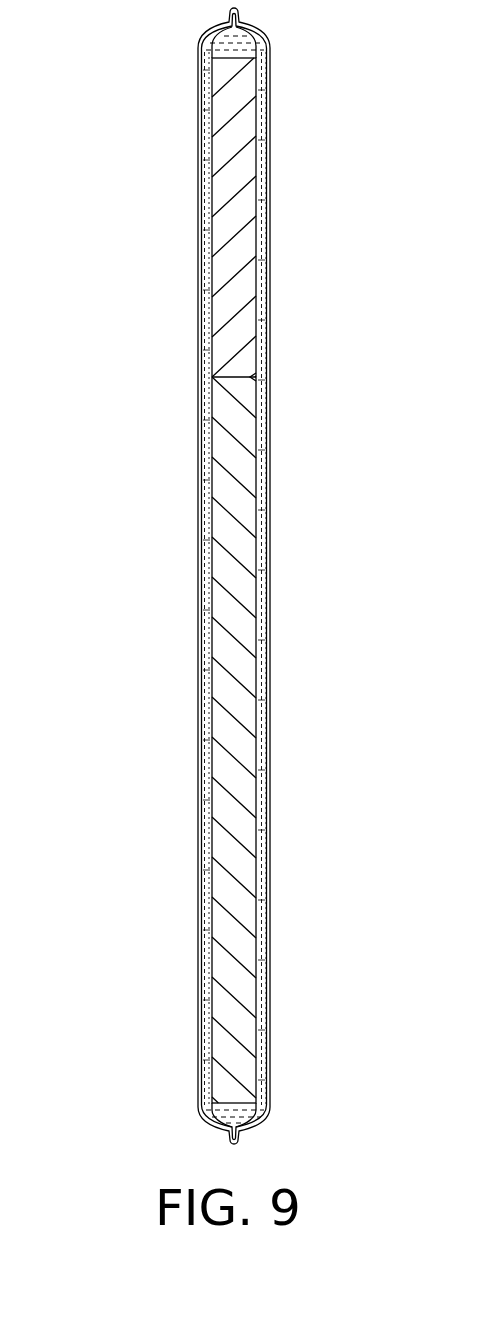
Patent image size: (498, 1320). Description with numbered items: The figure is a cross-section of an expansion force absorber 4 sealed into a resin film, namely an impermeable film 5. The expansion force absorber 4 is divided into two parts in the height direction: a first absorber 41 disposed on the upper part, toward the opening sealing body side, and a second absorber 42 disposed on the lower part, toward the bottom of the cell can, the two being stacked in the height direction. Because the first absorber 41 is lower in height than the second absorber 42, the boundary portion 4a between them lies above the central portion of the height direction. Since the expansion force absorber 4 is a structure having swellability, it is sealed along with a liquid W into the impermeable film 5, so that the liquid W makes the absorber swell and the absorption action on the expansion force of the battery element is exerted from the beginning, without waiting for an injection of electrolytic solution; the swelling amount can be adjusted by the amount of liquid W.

The liquid W is at (209, 576).
The impermeable film 5 is at (199, 253).
The expansion force absorber 4 is at (157, 580).
The first absorber 41 is at (230, 325).
The second absorber 42 is at (230, 420).
The boundary portion 4a is at (239, 372).